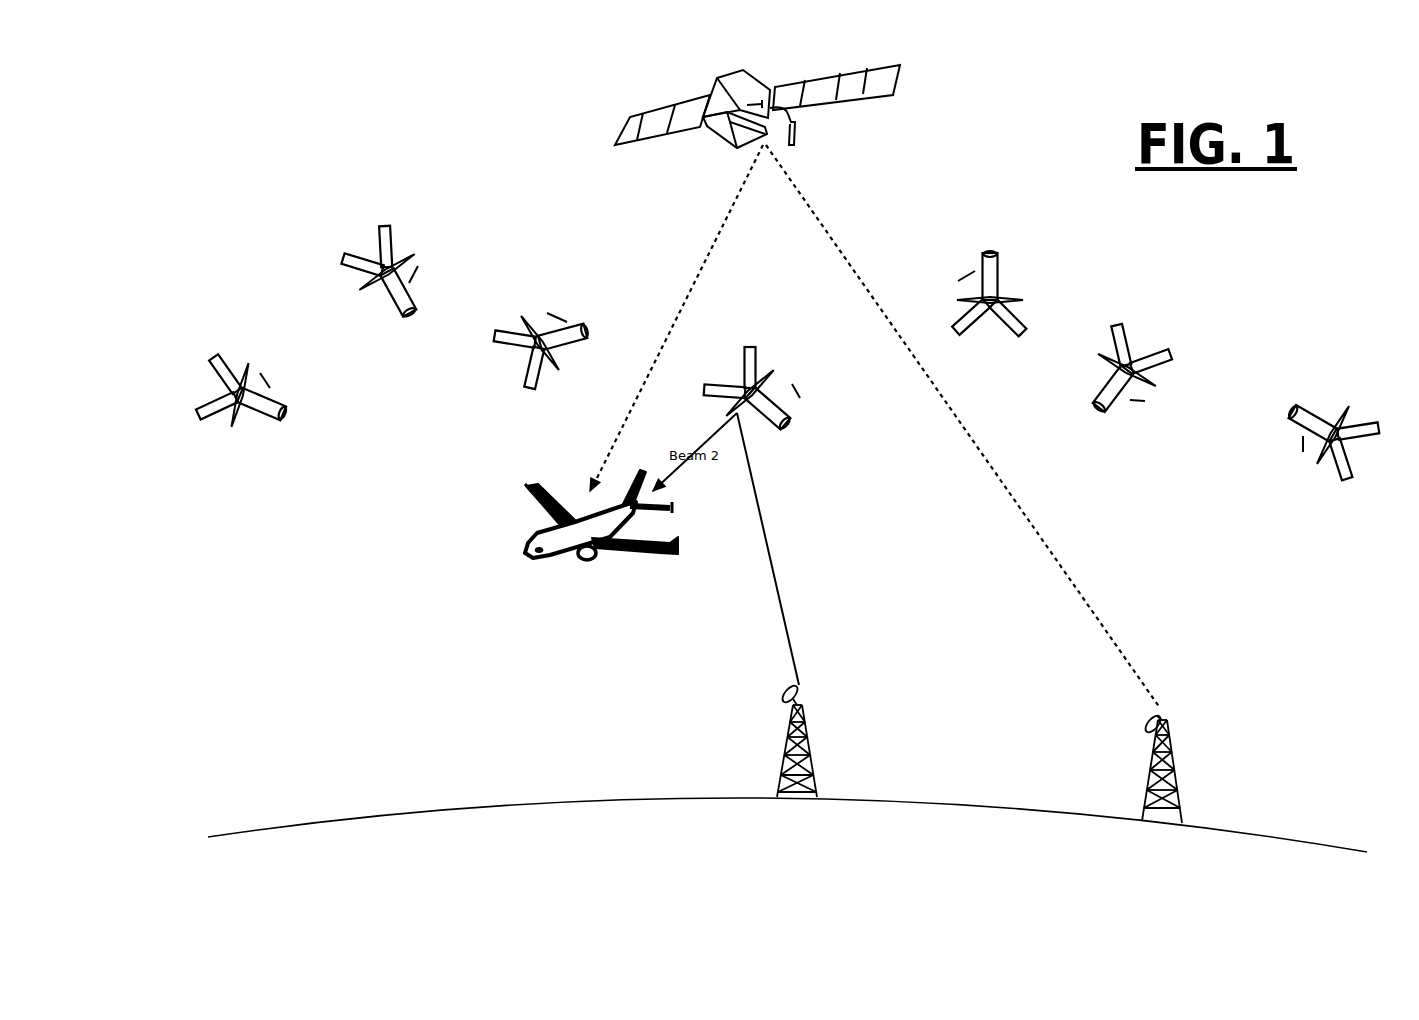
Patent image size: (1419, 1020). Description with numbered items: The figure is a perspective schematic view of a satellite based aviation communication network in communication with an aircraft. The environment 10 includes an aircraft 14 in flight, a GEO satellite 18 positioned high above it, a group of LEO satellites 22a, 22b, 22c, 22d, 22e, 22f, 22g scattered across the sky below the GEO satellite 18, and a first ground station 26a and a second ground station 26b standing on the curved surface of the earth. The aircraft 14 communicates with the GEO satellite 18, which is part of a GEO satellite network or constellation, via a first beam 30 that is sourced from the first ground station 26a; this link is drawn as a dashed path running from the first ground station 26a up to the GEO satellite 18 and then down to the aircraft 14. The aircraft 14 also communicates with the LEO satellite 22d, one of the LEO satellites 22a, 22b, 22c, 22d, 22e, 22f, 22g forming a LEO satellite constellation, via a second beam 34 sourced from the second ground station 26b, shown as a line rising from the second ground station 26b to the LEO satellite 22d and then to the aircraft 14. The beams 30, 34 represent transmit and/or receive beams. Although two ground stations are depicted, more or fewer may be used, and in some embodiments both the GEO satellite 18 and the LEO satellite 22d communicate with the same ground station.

The environment 10 is at (312, 152).
The aircraft 14 is at (560, 565).
The GEO satellite 18 is at (863, 95).
The LEO satellite 22a is at (212, 362).
The LEO satellite 22b is at (338, 258).
The LEO satellite 22c is at (565, 315).
The LEO satellite 22d is at (787, 402).
The LEO satellite 22e is at (958, 278).
The LEO satellite 22f is at (1118, 415).
The LEO satellite 22g is at (1290, 408).
The first ground station 26a is at (800, 684).
The second ground station 26b is at (1165, 710).
The first beam 30 is at (700, 268).
The second beam 34 is at (765, 527).